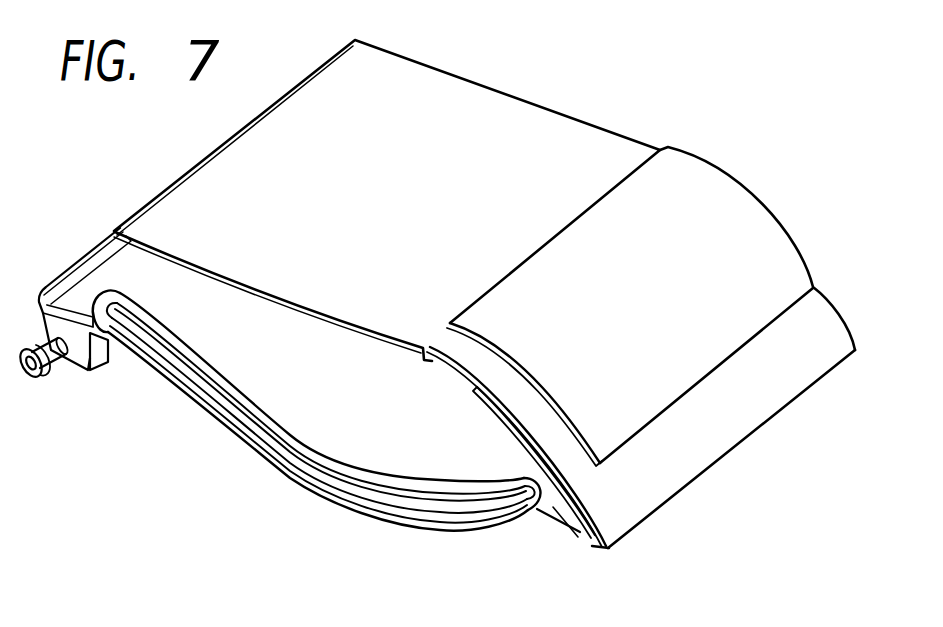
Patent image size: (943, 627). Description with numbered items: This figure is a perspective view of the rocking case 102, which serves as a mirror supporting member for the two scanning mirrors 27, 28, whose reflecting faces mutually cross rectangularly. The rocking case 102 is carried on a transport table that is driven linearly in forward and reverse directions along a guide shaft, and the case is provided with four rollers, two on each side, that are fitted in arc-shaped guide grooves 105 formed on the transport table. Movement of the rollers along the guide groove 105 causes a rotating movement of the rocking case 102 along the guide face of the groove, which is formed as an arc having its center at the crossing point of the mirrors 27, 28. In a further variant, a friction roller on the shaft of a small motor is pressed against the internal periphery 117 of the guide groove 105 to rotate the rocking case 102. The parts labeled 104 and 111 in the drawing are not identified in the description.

The rocking case 102 is at (564, 113).
The scanning mirror 28 is at (87, 284).
The fastener bolt 104 is at (33, 379).
The guide groove 105 is at (317, 428).
The internal periphery 117 is at (275, 466).
The flange of cover 111 is at (576, 417).
The scanning mirror 27 is at (537, 511).